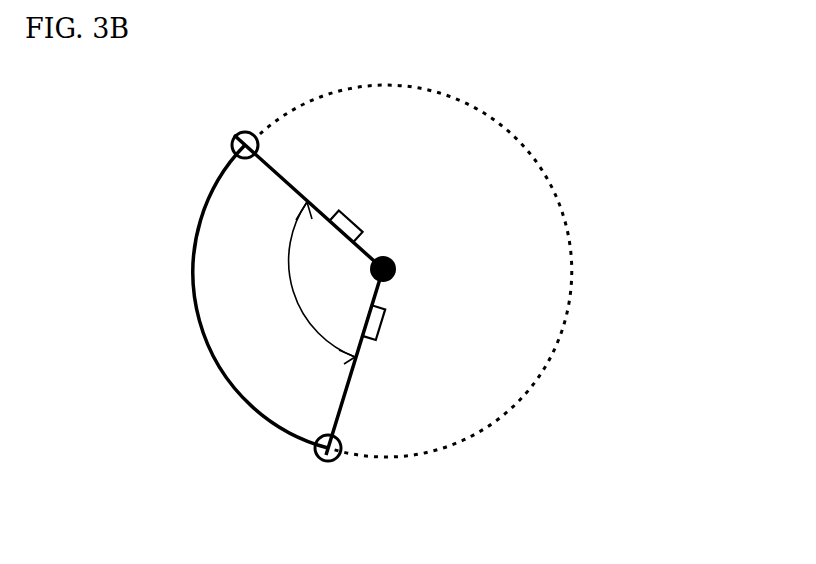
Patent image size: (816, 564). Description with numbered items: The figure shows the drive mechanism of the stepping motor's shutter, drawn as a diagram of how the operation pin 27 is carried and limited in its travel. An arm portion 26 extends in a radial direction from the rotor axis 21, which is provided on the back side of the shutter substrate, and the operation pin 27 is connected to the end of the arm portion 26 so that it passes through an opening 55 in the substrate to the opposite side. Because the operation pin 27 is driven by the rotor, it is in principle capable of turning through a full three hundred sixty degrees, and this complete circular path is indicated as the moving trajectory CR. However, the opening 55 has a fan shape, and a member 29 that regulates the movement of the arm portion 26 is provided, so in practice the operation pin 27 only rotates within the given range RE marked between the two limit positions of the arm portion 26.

The rotor axis 21 is at (395, 262).
The arm portion 26 is at (288, 181).
The operation pin 27 is at (233, 137).
The member 29 is at (350, 220).
The opening 55 is at (195, 283).
The given range RE is at (291, 283).
The moving trajectory CR is at (552, 192).